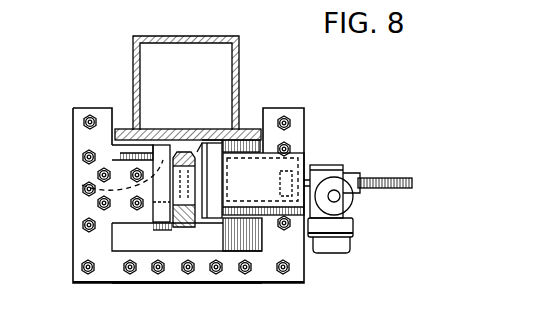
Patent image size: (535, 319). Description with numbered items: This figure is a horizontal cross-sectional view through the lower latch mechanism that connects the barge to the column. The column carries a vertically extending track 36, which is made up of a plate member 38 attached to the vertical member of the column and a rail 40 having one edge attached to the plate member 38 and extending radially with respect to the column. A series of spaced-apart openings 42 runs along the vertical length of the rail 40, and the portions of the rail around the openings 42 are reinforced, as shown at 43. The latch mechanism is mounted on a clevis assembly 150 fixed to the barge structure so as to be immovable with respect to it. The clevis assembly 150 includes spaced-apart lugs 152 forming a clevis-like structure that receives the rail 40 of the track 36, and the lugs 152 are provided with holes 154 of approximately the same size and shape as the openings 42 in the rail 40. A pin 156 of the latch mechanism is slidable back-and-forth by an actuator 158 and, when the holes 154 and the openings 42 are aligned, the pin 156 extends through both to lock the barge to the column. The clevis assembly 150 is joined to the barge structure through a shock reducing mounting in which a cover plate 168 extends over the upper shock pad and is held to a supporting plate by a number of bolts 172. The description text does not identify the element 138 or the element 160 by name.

The track 36 is at (131, 50).
The plate member 38 is at (158, 129).
The rail 40 is at (200, 157).
The openings 42 is at (182, 160).
The reinforced portions 43 is at (218, 143).
The threaded shaft 138 is at (390, 175).
The clevis assembly 150 is at (150, 197).
The lugs 152 is at (157, 158).
The holes 154 is at (82, 185).
The pin 156 is at (265, 165).
The actuator 158 is at (312, 158).
The base 160 is at (177, 238).
The cover plate 168 is at (115, 273).
The bolts 172 is at (287, 273).